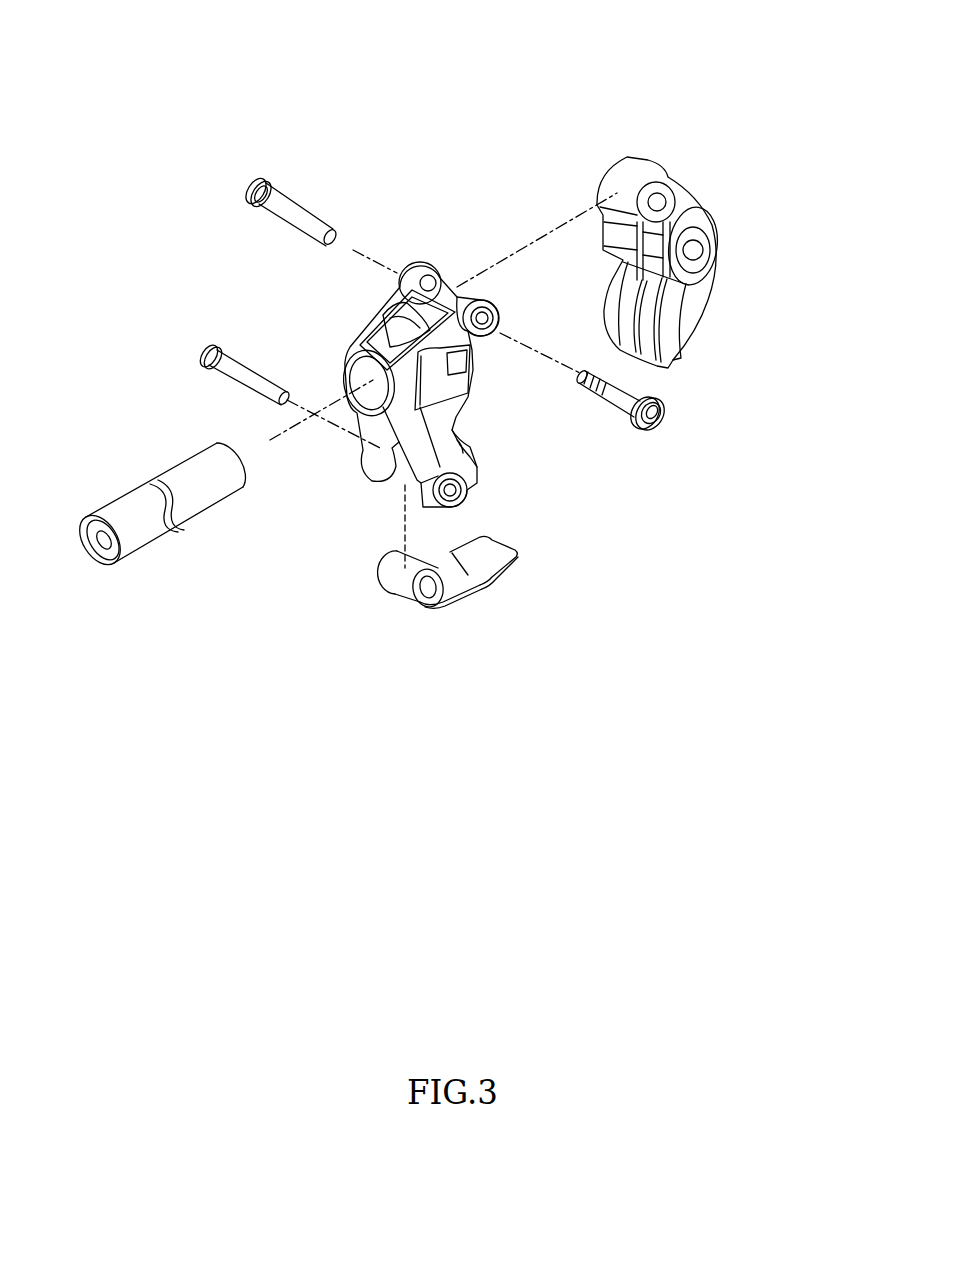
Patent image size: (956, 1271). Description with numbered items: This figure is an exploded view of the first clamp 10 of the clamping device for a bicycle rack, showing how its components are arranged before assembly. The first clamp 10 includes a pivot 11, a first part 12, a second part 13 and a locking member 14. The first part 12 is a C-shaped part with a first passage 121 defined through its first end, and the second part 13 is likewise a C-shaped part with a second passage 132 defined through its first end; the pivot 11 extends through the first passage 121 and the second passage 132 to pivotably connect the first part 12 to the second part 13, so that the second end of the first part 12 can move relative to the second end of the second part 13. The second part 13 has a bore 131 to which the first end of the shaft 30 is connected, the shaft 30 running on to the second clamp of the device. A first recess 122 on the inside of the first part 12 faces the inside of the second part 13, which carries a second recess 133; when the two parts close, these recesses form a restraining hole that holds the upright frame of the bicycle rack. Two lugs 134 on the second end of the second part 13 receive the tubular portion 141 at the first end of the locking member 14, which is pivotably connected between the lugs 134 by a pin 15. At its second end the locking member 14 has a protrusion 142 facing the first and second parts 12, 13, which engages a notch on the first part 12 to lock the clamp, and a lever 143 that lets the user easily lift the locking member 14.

The first clamp 10 is at (260, 75).
The pivot 11 is at (300, 205).
The first part 12 is at (723, 253).
The first passage 121 is at (657, 182).
The first recess 122 is at (690, 333).
The second part 13 is at (385, 320).
The bore 131 is at (362, 395).
The second passage 132 is at (430, 278).
The second recess 133 is at (472, 446).
The lugs 134 is at (422, 512).
The locking member 14 is at (518, 560).
The tubular portion 141 is at (413, 612).
The protrusion 142 is at (466, 586).
The lever 143 is at (500, 580).
The pin 15 is at (210, 360).
The shaft 30 is at (180, 462).